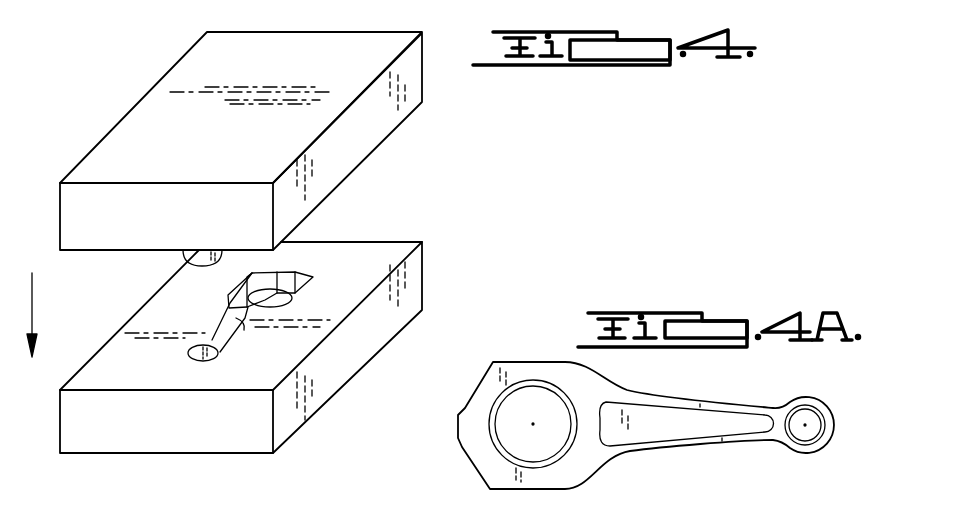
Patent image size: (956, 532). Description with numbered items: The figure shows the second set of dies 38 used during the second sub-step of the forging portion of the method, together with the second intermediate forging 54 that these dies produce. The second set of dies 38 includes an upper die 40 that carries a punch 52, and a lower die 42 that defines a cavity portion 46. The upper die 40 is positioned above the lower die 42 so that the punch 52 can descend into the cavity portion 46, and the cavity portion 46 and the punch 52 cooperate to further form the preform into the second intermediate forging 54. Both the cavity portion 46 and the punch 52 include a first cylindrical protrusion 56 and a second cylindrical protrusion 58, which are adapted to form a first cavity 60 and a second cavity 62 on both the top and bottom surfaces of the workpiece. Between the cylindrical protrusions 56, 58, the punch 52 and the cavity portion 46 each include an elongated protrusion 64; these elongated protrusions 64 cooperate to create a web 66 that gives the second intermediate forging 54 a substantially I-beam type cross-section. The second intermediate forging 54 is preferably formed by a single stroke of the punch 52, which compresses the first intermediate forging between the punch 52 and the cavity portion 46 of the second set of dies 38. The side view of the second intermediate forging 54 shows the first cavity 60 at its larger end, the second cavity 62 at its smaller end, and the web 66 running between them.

In FIG. 4, the second set of dies 38 is at (80, 91).
In FIG. 4, the upper die 40 is at (246, 150).
In FIG. 4, the lower die 42 is at (333, 367).
In FIG. 4, the cavity portion 46 is at (287, 275).
In FIG. 4, the punch 52 is at (187, 261).
In FIG. 4, the first cylindrical protrusion 56 is at (260, 303).
In FIG. 4, the second cylindrical protrusion 58 is at (205, 362).
In FIG. 4, the elongated protrusion 64 is at (246, 323).
In FIG. 4A, the second intermediate forging 54 is at (765, 468).
In FIG. 4A, the first cavity 60 is at (512, 435).
In FIG. 4A, the second cavity 62 is at (807, 418).
In FIG. 4A, the web 66 is at (675, 428).